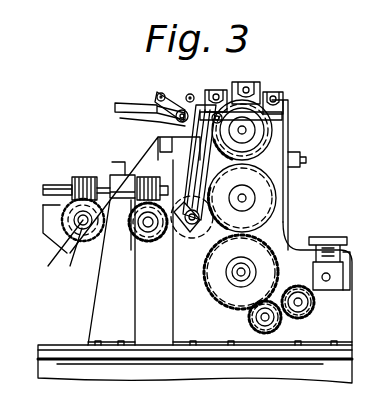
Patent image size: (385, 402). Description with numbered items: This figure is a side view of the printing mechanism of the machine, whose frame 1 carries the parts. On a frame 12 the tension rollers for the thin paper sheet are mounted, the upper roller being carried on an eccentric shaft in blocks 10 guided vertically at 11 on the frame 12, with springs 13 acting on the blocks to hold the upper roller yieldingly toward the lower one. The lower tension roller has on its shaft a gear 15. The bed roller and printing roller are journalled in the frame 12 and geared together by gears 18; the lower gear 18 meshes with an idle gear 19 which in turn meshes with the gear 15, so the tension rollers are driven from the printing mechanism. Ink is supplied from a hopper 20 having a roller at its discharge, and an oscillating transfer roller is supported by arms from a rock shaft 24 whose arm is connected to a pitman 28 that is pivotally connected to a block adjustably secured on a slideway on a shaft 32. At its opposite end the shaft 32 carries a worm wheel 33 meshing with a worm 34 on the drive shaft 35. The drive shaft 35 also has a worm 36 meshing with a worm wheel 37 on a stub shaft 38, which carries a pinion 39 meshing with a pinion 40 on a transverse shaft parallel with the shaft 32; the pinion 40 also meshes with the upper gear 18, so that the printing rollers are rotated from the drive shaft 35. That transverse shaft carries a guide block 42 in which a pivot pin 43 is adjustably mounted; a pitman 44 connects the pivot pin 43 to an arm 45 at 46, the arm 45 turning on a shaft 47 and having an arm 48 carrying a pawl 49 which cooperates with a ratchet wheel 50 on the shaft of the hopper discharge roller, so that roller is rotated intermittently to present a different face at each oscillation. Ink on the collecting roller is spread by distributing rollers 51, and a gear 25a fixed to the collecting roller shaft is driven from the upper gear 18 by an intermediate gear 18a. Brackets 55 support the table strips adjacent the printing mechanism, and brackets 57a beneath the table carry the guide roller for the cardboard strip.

The frame 1 is at (332, 372).
The blocks 10 is at (330, 277).
The vertical guides 11 is at (333, 256).
The frame 12 is at (283, 160).
The springs 13 is at (321, 248).
The gear 15 is at (328, 317).
The gears 18 is at (264, 207).
The intermediate gear 18a is at (128, 170).
The idle gear 19 is at (283, 335).
The hopper 20 is at (118, 105).
The rock shaft 24 is at (145, 136).
The gear 25a is at (270, 130).
The pitman 28 is at (191, 93).
The shaft 32 is at (53, 249).
The worm wheel 33 is at (62, 220).
The worm 34 is at (76, 176).
The drive shaft 35 is at (40, 190).
The worm 36 is at (153, 179).
The worm wheel 37 is at (80, 254).
The stub shaft 38 is at (140, 240).
The pinion 39 is at (149, 243).
The pinion 40 is at (172, 262).
The guide block 42 is at (193, 242).
The pivot pin 43 is at (226, 220).
The pitman 44 is at (206, 173).
The arm 45 is at (220, 90).
The pivotal connection 46 is at (270, 94).
The shaft 47 is at (153, 108).
The arm 48 is at (162, 93).
The pawl 49 is at (160, 95).
The ratchet wheel 50 is at (142, 114).
The distributing rollers 51 is at (240, 84).
The brackets 55 is at (108, 312).
The brackets 57a is at (47, 254).